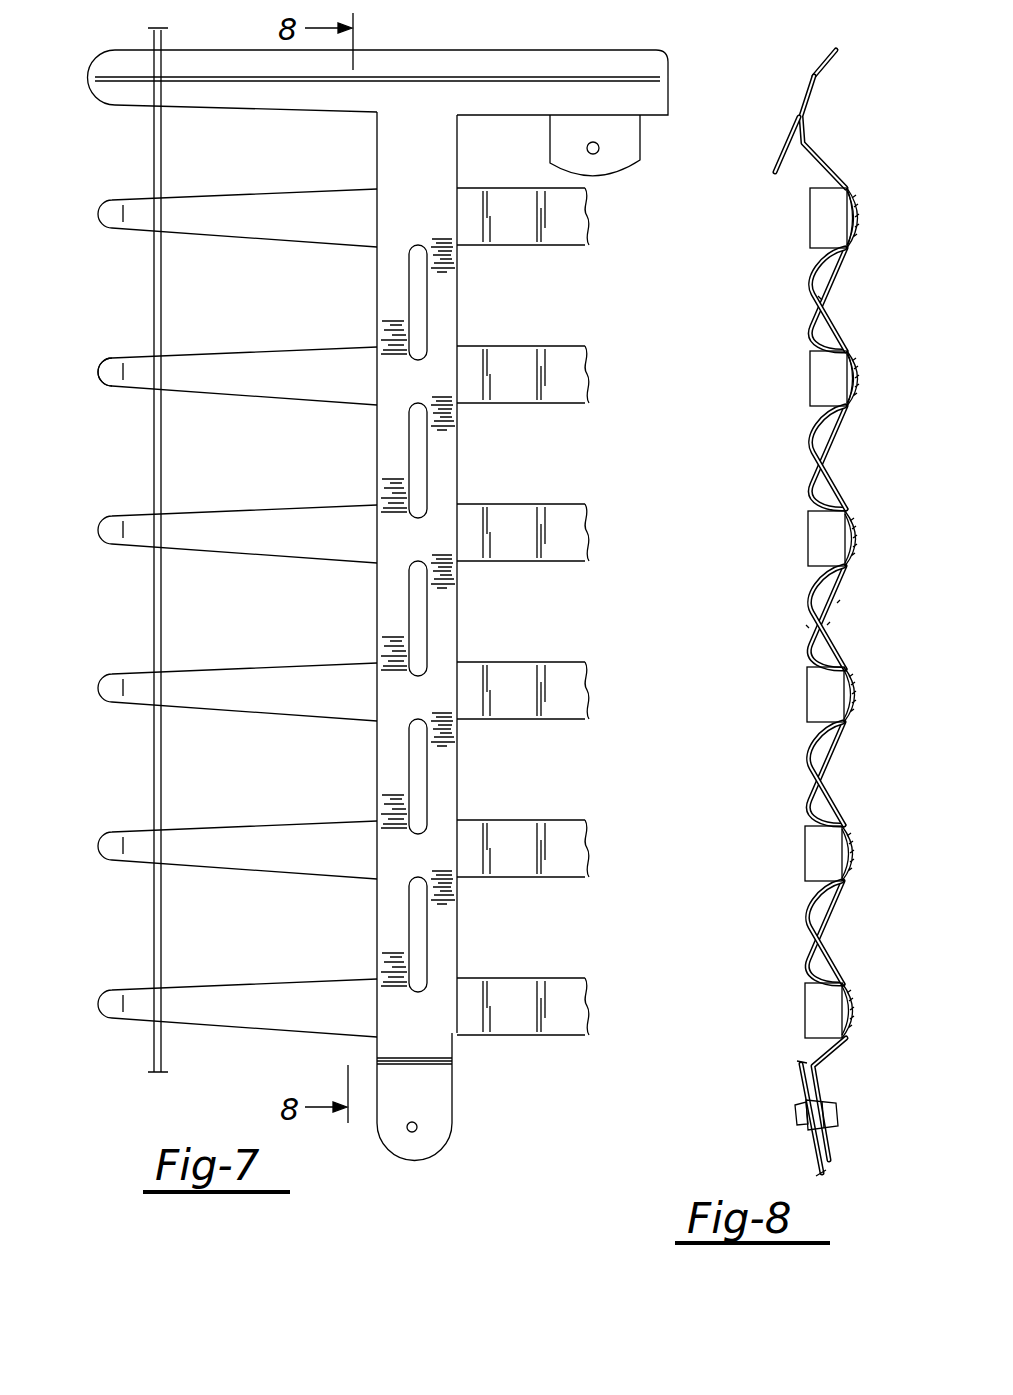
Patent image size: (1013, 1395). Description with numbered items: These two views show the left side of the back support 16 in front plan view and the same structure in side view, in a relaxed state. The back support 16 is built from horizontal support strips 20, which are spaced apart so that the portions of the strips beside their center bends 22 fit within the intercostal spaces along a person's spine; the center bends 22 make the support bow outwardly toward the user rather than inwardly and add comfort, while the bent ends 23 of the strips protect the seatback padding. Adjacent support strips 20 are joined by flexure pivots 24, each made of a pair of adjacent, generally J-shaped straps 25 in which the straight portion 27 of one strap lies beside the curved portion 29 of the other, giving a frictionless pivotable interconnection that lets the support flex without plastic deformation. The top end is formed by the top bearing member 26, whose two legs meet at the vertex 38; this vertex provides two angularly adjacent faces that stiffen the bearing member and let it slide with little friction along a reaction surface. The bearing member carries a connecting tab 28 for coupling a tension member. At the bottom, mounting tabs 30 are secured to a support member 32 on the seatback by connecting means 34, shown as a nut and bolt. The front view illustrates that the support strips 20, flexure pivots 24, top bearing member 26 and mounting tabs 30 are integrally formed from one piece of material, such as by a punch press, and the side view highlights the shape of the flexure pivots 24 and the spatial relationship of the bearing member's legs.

In FIG. 7, the back support 16 is at (130, 598).
In FIG. 8, the back support 16 is at (850, 598).
In FIG. 7, the horizontal support strips 20 is at (200, 512).
In FIG. 8, the horizontal support strips 20 is at (855, 215).
In FIG. 7, the center bends 22 is at (567, 350).
In FIG. 8, the center bends 22 is at (828, 378).
In FIG. 7, the bent ends 23 is at (112, 357).
In FIG. 7, the flexure pivots 24 is at (468, 310).
In FIG. 8, the flexure pivots 24 is at (838, 298).
In FIG. 8, the straps 25 is at (796, 625).
In FIG. 7, the top bearing member 26 is at (133, 107).
In FIG. 8, the top bearing member 26 is at (812, 100).
In FIG. 8, the straight portion 27 is at (832, 622).
In FIG. 7, the connecting tab 28 is at (641, 162).
In FIG. 8, the connecting tab 28 is at (773, 173).
In FIG. 8, the curved portion 29 is at (812, 597).
In FIG. 7, the mounting tabs 30 is at (458, 1130).
In FIG. 8, the mounting tabs 30 is at (835, 1065).
In FIG. 8, the support member 32 is at (800, 1075).
In FIG. 8, the connecting means 34 is at (838, 1115).
In FIG. 7, the vertex 38 is at (90, 76).
In FIG. 8, the vertex 38 is at (812, 80).